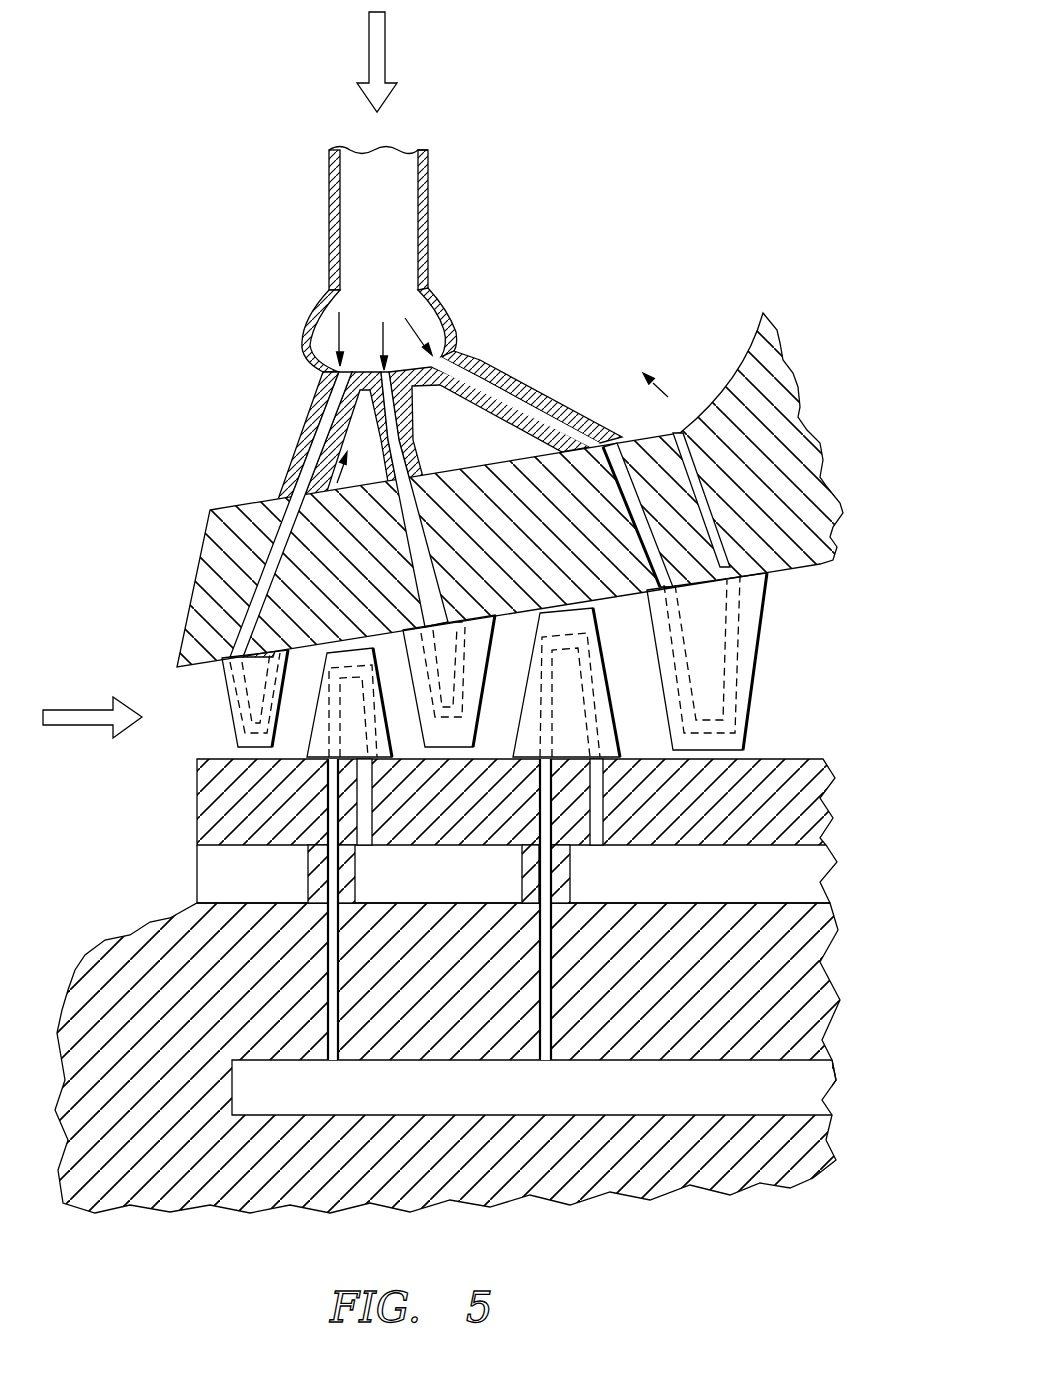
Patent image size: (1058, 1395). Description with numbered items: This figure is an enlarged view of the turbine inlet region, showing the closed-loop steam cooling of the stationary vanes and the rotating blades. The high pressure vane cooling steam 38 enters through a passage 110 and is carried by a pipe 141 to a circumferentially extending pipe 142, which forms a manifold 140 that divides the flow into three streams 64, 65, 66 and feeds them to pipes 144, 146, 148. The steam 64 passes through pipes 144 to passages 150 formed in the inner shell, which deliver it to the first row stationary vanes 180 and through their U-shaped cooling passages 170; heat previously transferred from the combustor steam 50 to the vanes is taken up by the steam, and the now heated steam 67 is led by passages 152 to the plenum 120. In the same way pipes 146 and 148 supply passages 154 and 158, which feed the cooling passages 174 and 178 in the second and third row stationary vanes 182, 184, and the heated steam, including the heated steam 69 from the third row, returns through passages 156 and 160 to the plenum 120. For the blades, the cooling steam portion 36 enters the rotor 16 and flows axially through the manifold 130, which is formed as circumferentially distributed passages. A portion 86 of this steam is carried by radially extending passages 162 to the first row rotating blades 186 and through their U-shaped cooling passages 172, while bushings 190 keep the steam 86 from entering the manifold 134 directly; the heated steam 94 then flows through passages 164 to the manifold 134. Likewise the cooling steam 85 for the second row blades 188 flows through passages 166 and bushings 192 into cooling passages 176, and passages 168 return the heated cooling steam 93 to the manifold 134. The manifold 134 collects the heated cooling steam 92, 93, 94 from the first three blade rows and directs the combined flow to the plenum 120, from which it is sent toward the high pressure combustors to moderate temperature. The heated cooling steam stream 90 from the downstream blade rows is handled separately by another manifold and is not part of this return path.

The high pressure vane cooling steam 38 is at (387, 48).
The pipe 141 is at (430, 186).
The passage 110 is at (400, 205).
The manifold 140 is at (400, 285).
The plenum 120 is at (664, 253).
The circumferentially extending pipe 142 is at (444, 304).
The steam 64 is at (322, 330).
The steam 65 is at (368, 350).
The steam 66 is at (440, 336).
The pipe 148 is at (537, 392).
The heated steam 69 is at (672, 433).
The pipe 144 is at (292, 456).
The heated cooling steam stream 90 is at (211, 508).
The heated steam 67 is at (348, 480).
The passage 160 is at (703, 490).
The passage 154 is at (422, 542).
The pipe 146 is at (396, 489).
The passage 158 is at (623, 516).
The passage 156 is at (480, 572).
The passage 150 is at (252, 600).
The passage 152 is at (296, 578).
The third row stationary vanes 184 is at (766, 616).
The first row rotating blades 186 is at (318, 693).
The second row stationary vanes 182 is at (410, 687).
The second row blades 188 is at (527, 675).
The cooling passage 178 is at (733, 698).
The first row stationary vanes 180 is at (227, 695).
The cooling passage 170 is at (240, 711).
The cooling passage 172 is at (330, 720).
The cooling passage 174 is at (430, 707).
The cooling passage 176 is at (542, 695).
The rotor 16 is at (790, 759).
The combustor steam 50 is at (78, 726).
The passage 164 is at (370, 812).
The passage 168 is at (598, 808).
The heated cooling steam 92 is at (762, 865).
The bushing 190 is at (306, 880).
The heated steam 94 is at (374, 871).
The bushing 192 is at (522, 863).
The heated cooling steam 93 is at (592, 872).
The manifold 134 is at (737, 880).
The cooling steam portion 36 is at (828, 1080).
The cooling steam portion 86 is at (333, 1082).
The radially extending passage 162 is at (335, 1012).
The cooling steam 85 is at (545, 1076).
The passage 166 is at (550, 1007).
The manifold 130 is at (762, 1095).